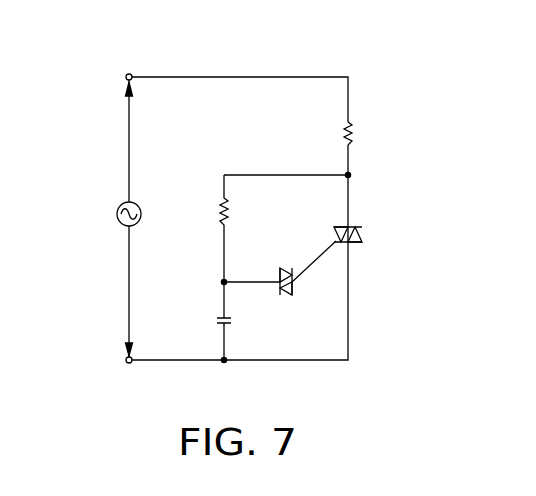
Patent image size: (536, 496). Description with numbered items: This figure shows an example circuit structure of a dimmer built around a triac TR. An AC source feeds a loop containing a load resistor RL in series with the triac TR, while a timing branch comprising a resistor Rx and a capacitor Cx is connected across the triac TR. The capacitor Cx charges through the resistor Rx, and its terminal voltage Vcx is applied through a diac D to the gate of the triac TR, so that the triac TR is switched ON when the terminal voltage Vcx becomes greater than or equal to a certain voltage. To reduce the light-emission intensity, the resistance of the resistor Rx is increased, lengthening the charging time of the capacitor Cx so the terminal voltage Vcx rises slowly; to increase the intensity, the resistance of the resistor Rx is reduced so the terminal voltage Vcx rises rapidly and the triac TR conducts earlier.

The load resistor RL is at (364, 133).
The resistor Rx is at (241, 228).
The capacitor Cx is at (239, 322).
The terminal voltage Vcx is at (231, 283).
The diac (trigger diode) D is at (286, 273).
The triac TR is at (359, 223).